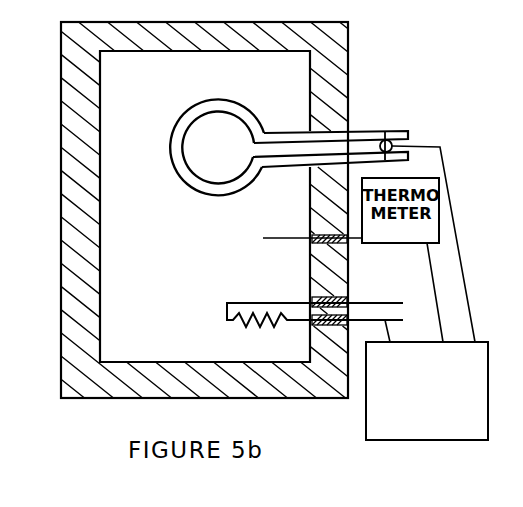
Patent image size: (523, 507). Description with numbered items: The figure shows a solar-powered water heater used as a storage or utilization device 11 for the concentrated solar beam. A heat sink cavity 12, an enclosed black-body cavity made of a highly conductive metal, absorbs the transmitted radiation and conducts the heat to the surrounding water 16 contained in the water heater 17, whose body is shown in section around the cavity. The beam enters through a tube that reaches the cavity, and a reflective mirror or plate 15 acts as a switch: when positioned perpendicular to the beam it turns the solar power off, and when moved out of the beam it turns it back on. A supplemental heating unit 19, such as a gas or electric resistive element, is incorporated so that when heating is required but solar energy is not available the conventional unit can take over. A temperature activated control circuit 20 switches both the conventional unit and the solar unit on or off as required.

The storage or utilization device 11 is at (205, 206).
The heat sink cavity 12 is at (208, 165).
The reflective mirror or plate 15 is at (388, 140).
The surrounding water 16 is at (87, 283).
The water heater 17 is at (58, 162).
The supplemental heating unit 19 is at (382, 302).
The control circuit 20 is at (408, 440).